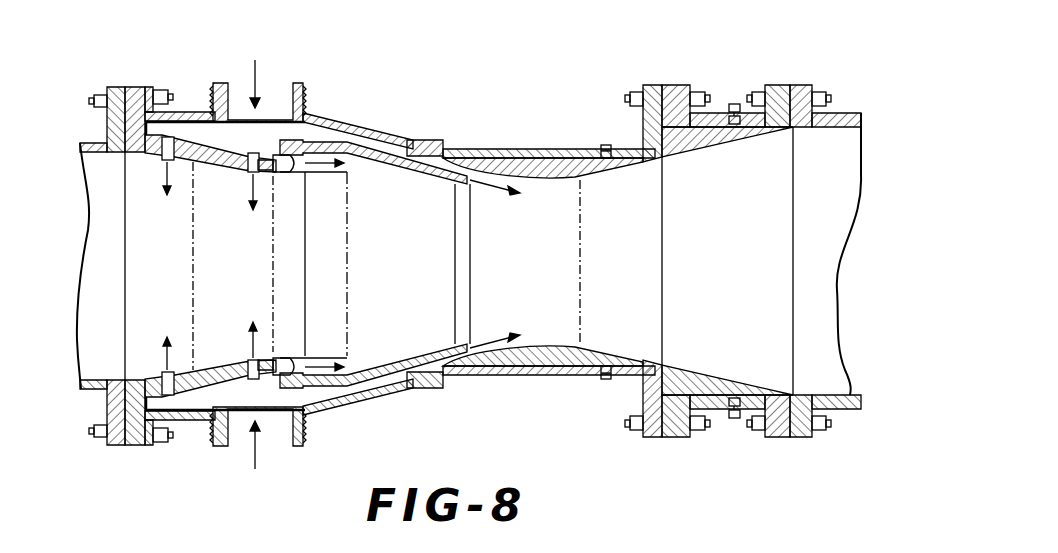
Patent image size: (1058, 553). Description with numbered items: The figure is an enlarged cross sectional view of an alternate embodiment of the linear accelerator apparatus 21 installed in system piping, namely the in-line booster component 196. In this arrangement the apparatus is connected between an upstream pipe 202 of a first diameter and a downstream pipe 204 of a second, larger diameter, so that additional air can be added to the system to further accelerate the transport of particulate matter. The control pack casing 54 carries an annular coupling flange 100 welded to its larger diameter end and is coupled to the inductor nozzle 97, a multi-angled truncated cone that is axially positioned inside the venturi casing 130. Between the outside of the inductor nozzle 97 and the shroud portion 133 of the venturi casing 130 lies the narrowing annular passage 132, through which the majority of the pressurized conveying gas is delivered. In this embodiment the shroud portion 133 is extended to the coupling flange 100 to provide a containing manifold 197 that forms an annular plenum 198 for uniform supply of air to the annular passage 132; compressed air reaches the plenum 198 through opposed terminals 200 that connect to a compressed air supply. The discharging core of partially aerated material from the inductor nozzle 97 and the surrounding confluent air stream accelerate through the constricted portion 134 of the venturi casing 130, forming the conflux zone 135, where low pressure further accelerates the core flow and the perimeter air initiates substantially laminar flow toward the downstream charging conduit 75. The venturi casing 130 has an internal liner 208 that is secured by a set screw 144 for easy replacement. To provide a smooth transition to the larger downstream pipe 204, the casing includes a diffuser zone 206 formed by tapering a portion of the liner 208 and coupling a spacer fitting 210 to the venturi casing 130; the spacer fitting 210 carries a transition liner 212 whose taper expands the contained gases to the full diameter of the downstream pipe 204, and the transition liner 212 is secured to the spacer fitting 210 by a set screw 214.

The upstream pipe 202 is at (96, 143).
The coupling flange 100 is at (138, 87).
The annular plenum 198 is at (196, 111).
The terminals 200 is at (306, 100).
The containing manifold 197 is at (270, 152).
The annular passage 132 is at (320, 126).
The inductor nozzle 97 is at (383, 362).
The in-line booster component 196 is at (405, 124).
The shroud portion 133 is at (380, 388).
The venturi casing 130 is at (478, 149).
The liner 208 is at (600, 372).
The linear accelerator apparatus 21 is at (546, 140).
The constricted portion 134 is at (517, 352).
The set screw 144 is at (606, 144).
The spacer fitting 210 is at (713, 112).
The transition liner 212 is at (692, 375).
The set screw 214 is at (736, 103).
The downstream pipe 204 is at (840, 113).
The charging conduit 75 is at (242, 279).
The conflux zone 135 is at (532, 269).
The diffuser zone 206 is at (732, 279).
The control pack casing 54 is at (228, 362).